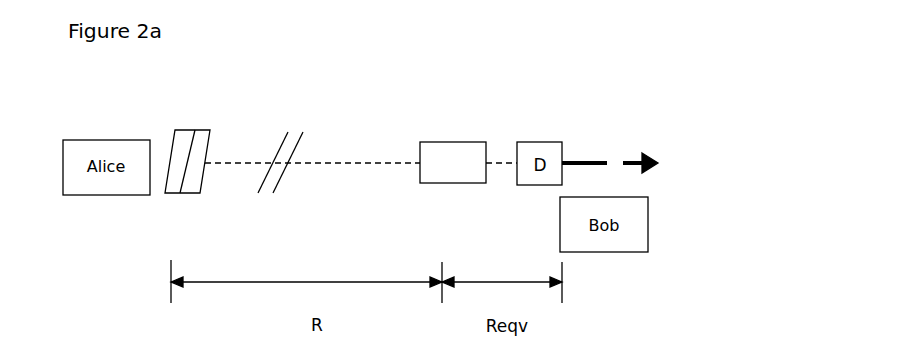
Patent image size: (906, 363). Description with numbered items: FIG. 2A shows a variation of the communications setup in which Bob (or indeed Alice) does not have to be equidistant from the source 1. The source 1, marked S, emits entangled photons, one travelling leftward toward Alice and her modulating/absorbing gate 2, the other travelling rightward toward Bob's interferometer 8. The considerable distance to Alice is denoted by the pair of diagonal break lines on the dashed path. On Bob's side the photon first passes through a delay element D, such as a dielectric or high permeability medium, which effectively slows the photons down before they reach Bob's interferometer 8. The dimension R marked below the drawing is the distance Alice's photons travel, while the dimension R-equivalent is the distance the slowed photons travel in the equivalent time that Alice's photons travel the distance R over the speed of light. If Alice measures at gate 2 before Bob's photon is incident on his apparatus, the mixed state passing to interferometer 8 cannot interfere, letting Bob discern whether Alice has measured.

The source 1 is at (453, 185).
The modulating/absorbing gate 2 is at (187, 183).
The interferometer 8 is at (610, 152).